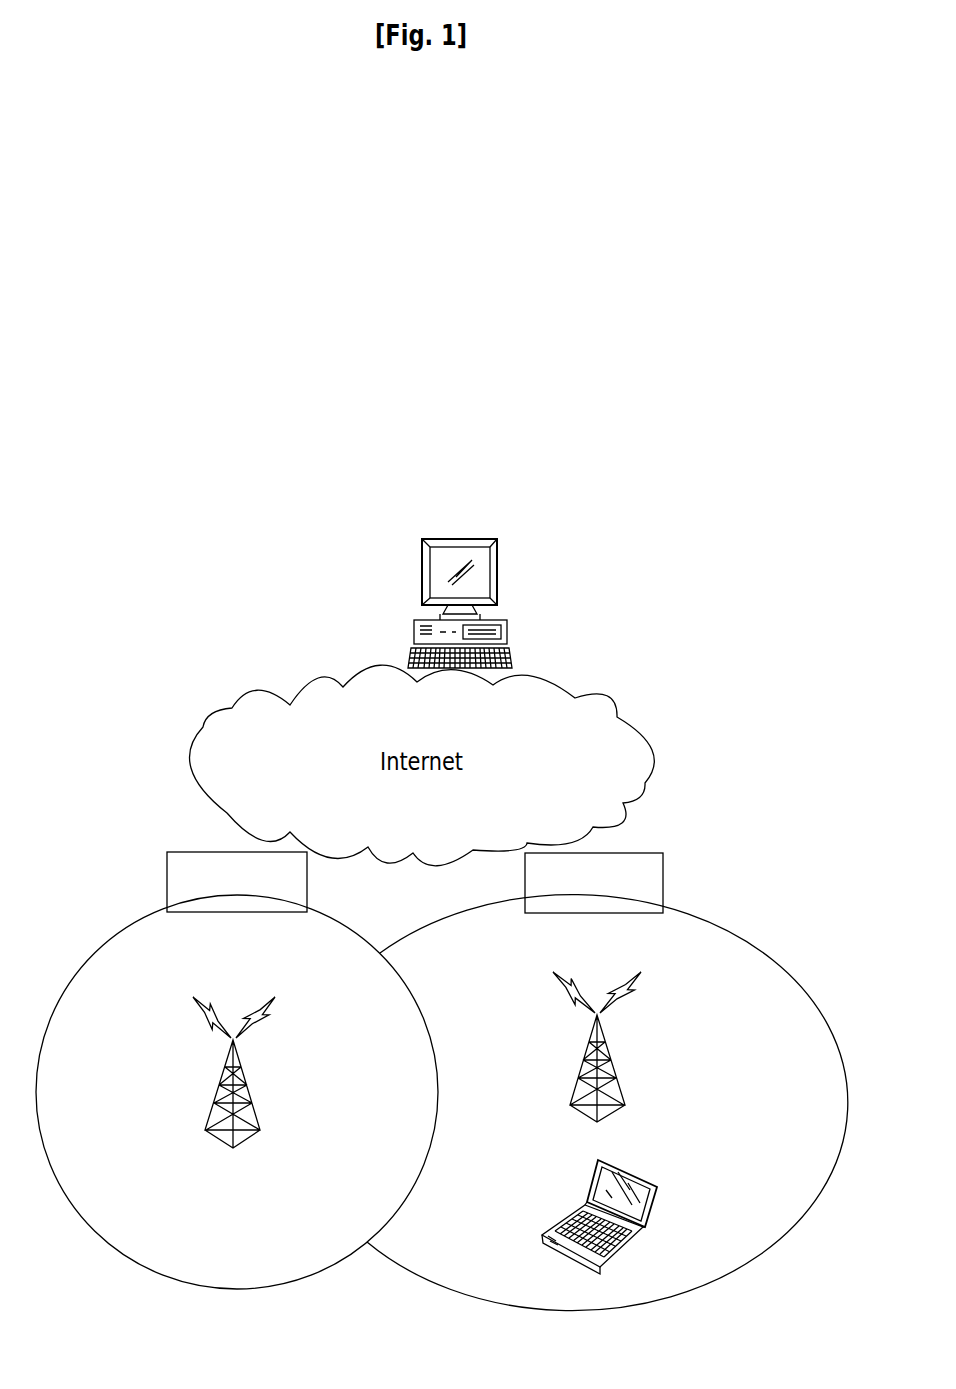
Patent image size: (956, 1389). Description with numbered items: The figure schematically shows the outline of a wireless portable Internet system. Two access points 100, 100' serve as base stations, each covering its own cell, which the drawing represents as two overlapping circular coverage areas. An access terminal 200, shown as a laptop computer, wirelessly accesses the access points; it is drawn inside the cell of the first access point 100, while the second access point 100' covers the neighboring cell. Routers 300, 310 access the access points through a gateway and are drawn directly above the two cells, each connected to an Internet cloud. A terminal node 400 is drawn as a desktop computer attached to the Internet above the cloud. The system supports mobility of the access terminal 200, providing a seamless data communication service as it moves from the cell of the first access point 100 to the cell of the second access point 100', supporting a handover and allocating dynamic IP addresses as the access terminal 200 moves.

The access point 100 is at (622, 1047).
The access point 100' is at (211, 1072).
The access terminal 200 is at (658, 1210).
The router 300 is at (665, 880).
The router 310 is at (167, 878).
The terminal node 400 is at (500, 571).